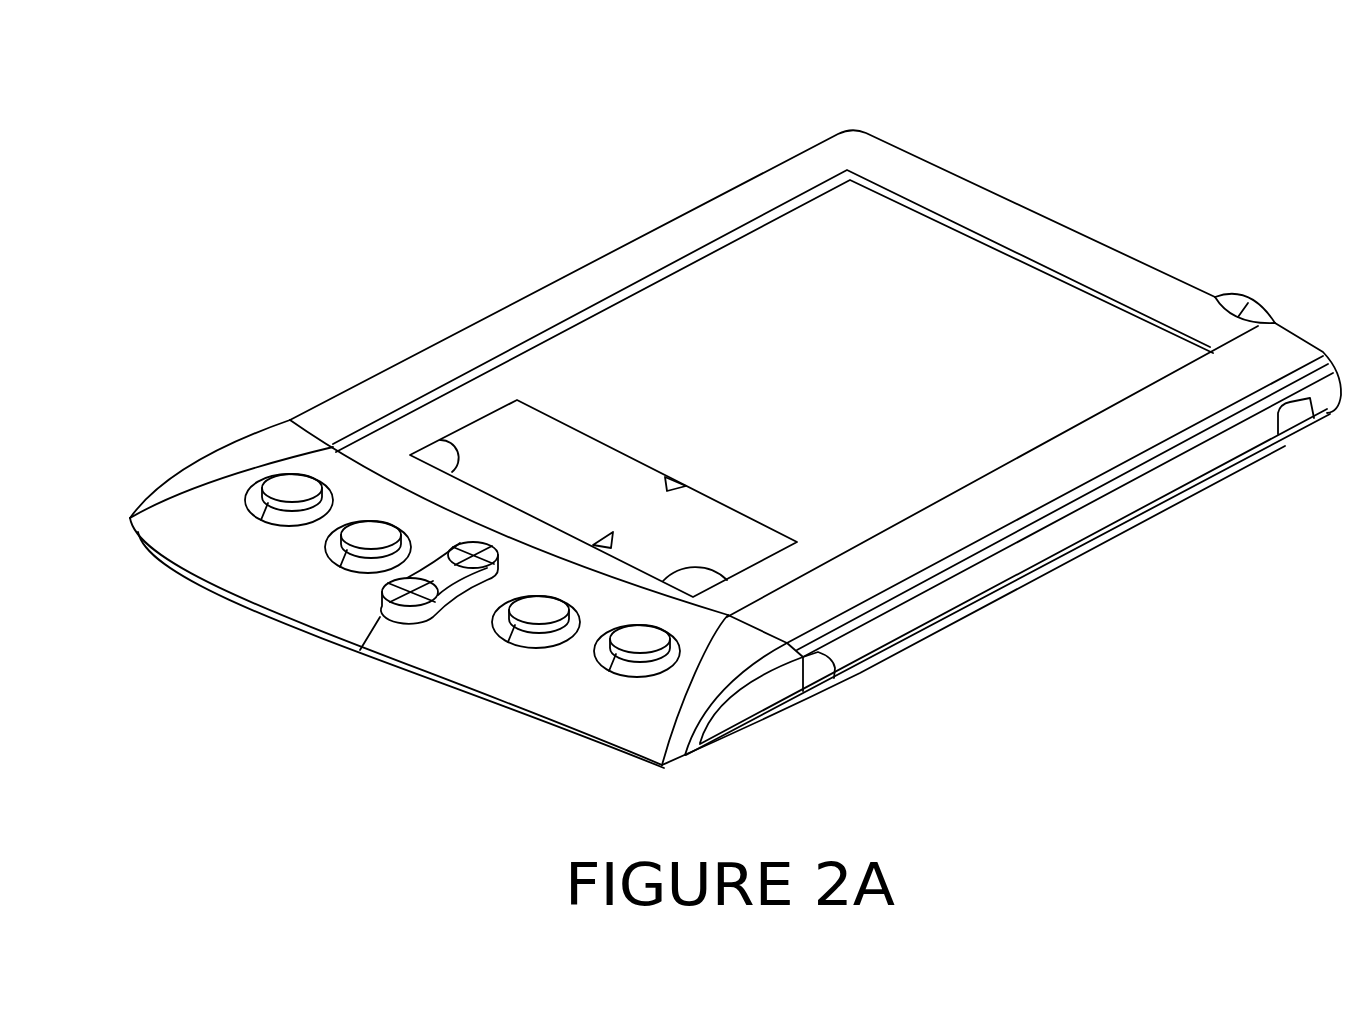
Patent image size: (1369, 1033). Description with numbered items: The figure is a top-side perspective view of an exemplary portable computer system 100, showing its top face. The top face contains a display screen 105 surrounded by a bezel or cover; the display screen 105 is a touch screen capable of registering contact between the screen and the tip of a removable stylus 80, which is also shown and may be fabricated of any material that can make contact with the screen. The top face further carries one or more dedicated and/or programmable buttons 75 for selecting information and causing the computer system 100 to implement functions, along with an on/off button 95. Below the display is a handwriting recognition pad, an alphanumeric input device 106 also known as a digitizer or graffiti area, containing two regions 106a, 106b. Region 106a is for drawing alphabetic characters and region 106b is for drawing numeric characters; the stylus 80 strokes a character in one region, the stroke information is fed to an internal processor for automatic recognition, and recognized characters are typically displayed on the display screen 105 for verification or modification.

The portable computer system 100 is at (178, 79).
The display screen 105 is at (814, 290).
The alphanumeric input device 106 is at (509, 426).
The region 106a is at (511, 476).
The region 106b is at (674, 553).
The buttons 75 is at (293, 480).
The on/off button 95 is at (1242, 296).
The stylus 80 is at (1043, 550).